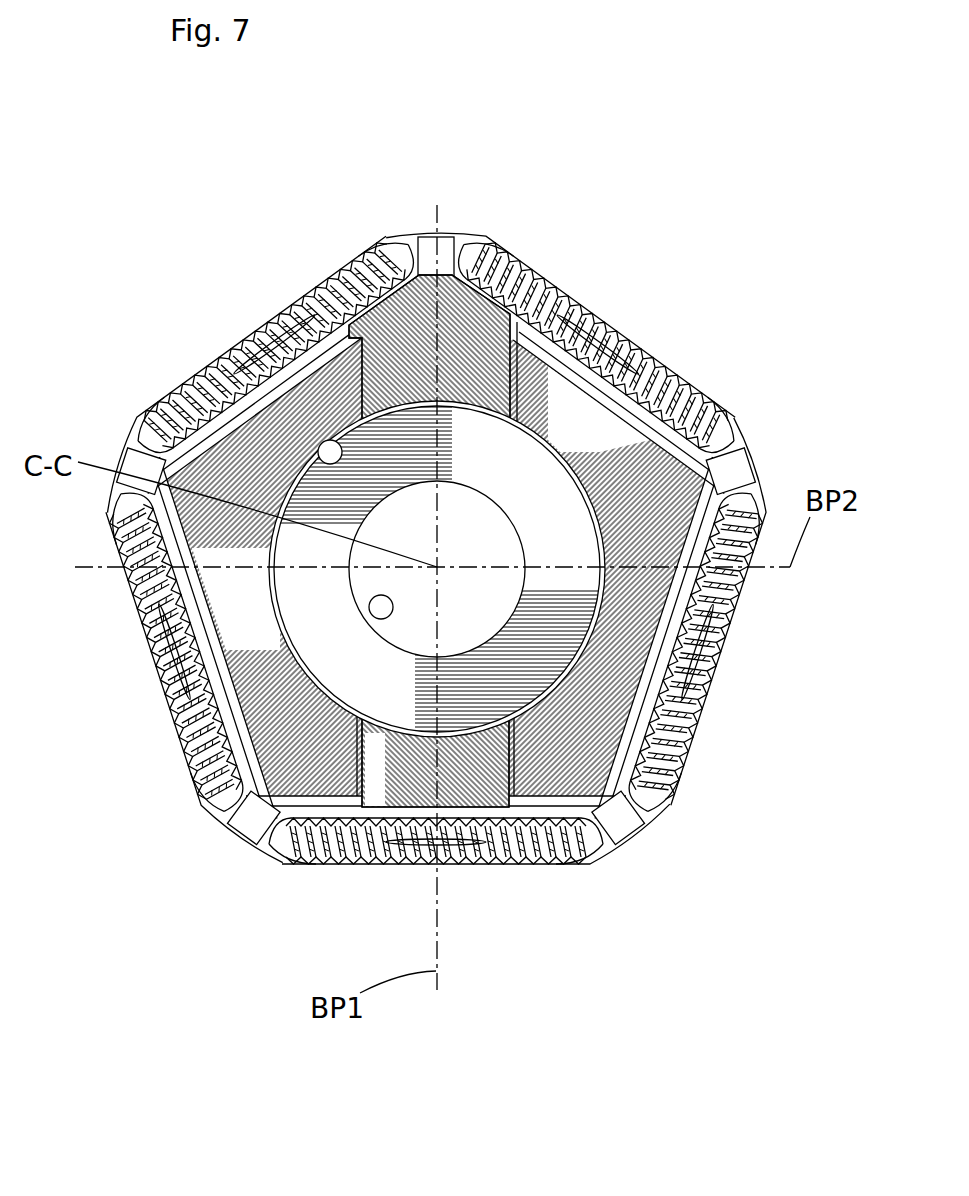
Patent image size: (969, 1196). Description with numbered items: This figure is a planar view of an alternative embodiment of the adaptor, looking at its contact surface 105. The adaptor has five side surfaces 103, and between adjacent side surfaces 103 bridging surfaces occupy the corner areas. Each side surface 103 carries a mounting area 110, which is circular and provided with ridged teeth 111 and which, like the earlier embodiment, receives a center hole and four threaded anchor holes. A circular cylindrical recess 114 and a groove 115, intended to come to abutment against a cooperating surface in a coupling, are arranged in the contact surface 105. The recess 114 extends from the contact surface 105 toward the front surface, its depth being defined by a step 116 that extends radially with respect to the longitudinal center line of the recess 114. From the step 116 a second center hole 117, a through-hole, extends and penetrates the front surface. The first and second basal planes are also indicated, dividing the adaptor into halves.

The side surface 103 is at (180, 447).
The contact surface 105 is at (603, 437).
The mounting area 110 is at (597, 300).
The ridged teeth 111 is at (603, 328).
The circular cylindrical recess 114 is at (340, 440).
The groove 115 is at (470, 320).
The step 116 is at (214, 360).
The second center hole 117 is at (374, 618).